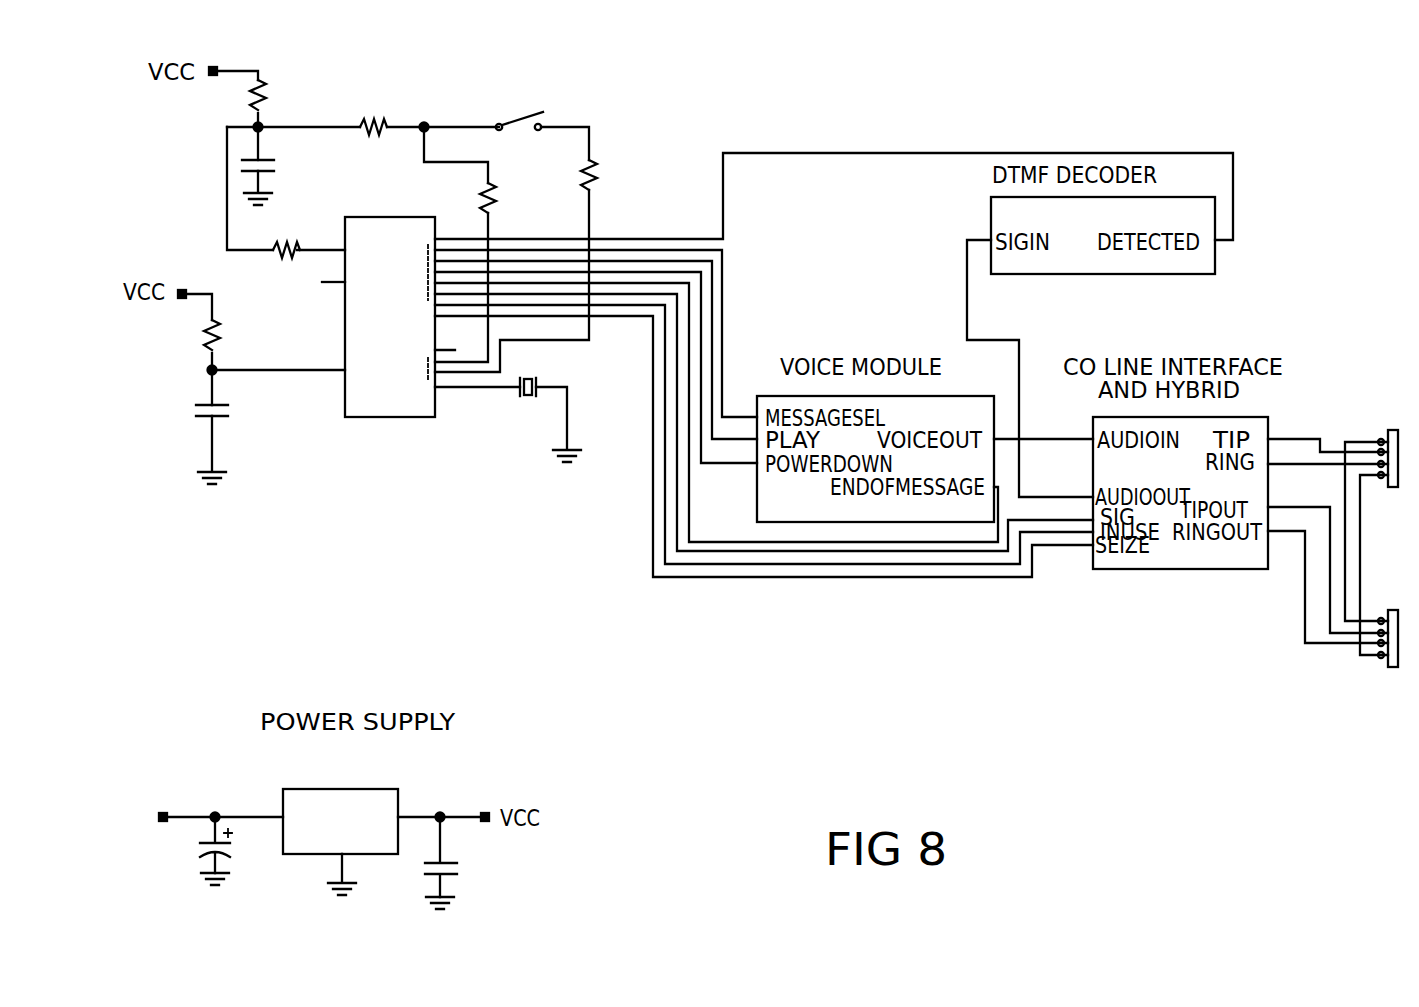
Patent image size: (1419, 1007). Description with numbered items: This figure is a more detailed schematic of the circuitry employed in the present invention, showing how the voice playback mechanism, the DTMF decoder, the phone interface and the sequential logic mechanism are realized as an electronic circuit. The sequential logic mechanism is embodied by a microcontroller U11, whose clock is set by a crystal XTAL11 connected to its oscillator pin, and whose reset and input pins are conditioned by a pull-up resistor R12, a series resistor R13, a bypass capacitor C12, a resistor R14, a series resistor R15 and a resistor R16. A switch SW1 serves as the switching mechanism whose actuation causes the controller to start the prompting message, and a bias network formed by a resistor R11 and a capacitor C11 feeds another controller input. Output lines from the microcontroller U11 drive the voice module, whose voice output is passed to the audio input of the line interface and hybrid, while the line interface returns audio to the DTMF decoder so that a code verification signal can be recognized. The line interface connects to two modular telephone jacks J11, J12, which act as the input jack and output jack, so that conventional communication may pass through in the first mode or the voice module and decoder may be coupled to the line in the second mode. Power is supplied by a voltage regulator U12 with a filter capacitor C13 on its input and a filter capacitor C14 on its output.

The resistor R11 3.3K R11 is at (241, 343).
The resistor R12 47K R12 is at (283, 96).
The resistor R13 100R R13 is at (276, 273).
The resistor R14 4.7K R14 is at (379, 103).
The resistor R15 100R R15 is at (517, 202).
The resistor R16 100R R16 is at (618, 177).
The capacitor C11 300PF C11 is at (248, 413).
The capacitor C12 0.1UF C12 is at (283, 166).
The capacitor C13 22UF C13 is at (182, 848).
The capacitor C14 0.1UF C14 is at (475, 857).
The microcontroller PIC16C52 U11 is at (386, 295).
The voltage regulator LM7805 U12 is at (340, 799).
The switch SW1 is at (516, 107).
The crystal resonator PKM22EP 2001 XTAL11 is at (542, 379).
The RJ11 jack J11 is at (1387, 445).
The RJ11 jack J12 is at (1388, 620).